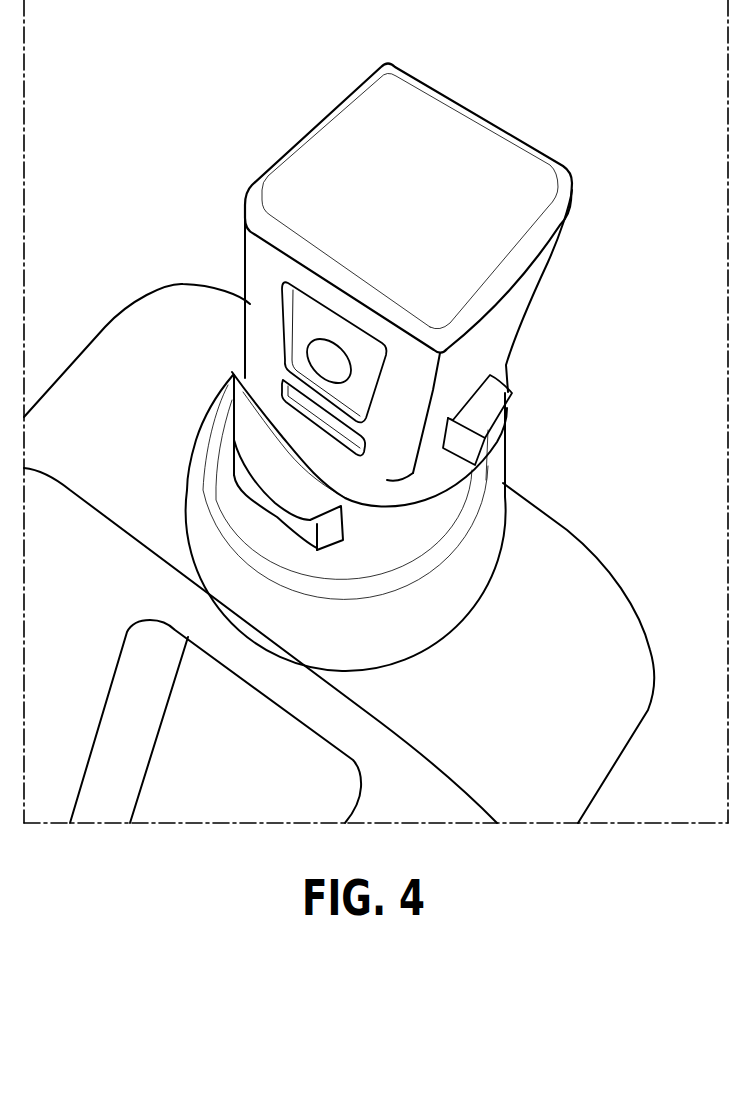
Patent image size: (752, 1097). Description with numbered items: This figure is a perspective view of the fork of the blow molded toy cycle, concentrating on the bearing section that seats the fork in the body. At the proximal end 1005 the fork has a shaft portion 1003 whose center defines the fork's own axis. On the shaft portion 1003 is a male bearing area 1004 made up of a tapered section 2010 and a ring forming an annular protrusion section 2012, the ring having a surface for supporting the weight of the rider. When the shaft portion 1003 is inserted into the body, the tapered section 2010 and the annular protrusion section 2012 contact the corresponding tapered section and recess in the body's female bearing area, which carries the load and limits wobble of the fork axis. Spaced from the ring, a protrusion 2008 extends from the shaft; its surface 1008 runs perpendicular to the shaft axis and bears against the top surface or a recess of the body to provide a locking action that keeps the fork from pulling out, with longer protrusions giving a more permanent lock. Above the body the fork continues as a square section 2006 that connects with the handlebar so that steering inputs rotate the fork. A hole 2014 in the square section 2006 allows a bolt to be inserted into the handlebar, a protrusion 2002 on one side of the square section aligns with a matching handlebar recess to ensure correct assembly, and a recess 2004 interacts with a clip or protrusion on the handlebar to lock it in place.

The shaft portion 1003 is at (543, 374).
The male bearing area 1004 is at (572, 524).
The proximal end 1005 is at (372, 251).
The surface of the protrusion 1008 is at (318, 551).
The protrusion 2002 is at (484, 404).
The recess 2004 is at (282, 396).
The square section 2006 is at (340, 142).
The protrusion 2008 is at (252, 497).
The tapered section 2010 is at (443, 537).
The annular protrusion section 2012 is at (213, 433).
The hole 2014 is at (288, 336).